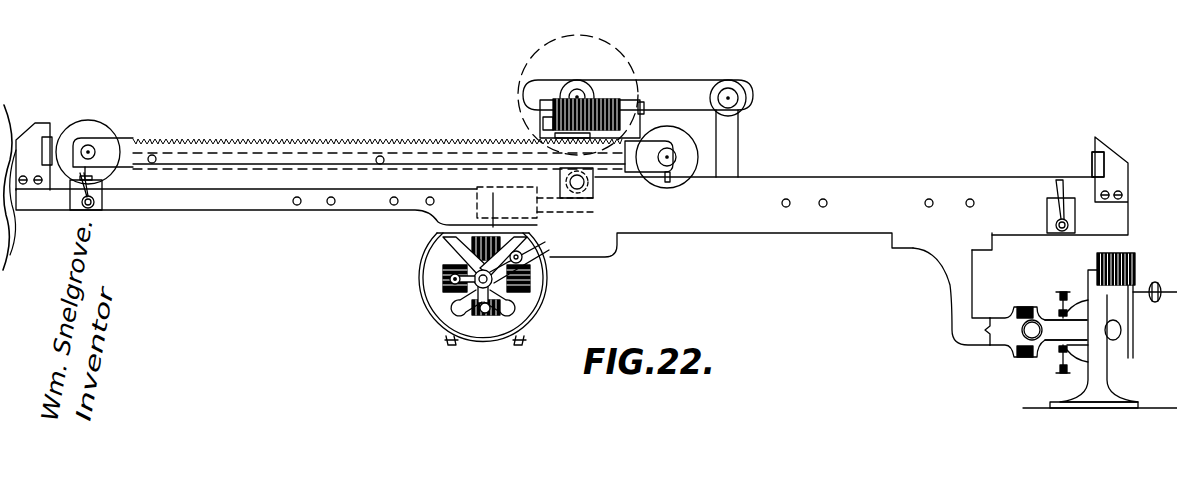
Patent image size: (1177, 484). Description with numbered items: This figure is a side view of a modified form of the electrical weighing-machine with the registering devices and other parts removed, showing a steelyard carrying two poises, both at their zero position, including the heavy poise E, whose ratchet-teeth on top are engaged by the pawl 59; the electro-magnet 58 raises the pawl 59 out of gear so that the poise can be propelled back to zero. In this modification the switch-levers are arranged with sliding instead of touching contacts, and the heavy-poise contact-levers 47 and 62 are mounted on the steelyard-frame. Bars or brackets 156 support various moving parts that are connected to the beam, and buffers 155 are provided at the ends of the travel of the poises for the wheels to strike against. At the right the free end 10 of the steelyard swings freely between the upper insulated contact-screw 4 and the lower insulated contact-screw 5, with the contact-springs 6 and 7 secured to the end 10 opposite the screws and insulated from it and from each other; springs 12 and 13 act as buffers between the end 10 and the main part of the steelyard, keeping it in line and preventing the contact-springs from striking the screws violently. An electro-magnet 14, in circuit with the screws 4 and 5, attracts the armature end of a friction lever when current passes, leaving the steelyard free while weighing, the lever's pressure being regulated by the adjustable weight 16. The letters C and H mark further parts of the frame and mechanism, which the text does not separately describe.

The electro-magnet 58 is at (607, 103).
The bars or brackets 156 is at (638, 128).
The pawl 59 is at (528, 142).
The heavy-poise contact-lever 62 is at (101, 183).
The buffers 155 is at (1092, 163).
The heavy-poise contact-lever 47 is at (1061, 198).
The electro-magnet 14 is at (1116, 299).
The adjustable weight 16 is at (1155, 302).
The upper insulated contact-screw 4 is at (1066, 302).
The lower insulated contact-screw 5 is at (1064, 360).
The contact-spring 6 is at (1066, 330).
The contact-spring 7 is at (1068, 348).
The free end of the beam or steelyard 10 is at (1100, 339).
The spring 12 is at (1036, 325).
The spring 13 is at (1027, 348).
The heavy poise E is at (377, 154).
The carriage bar C is at (572, 197).
The wheel H is at (484, 289).